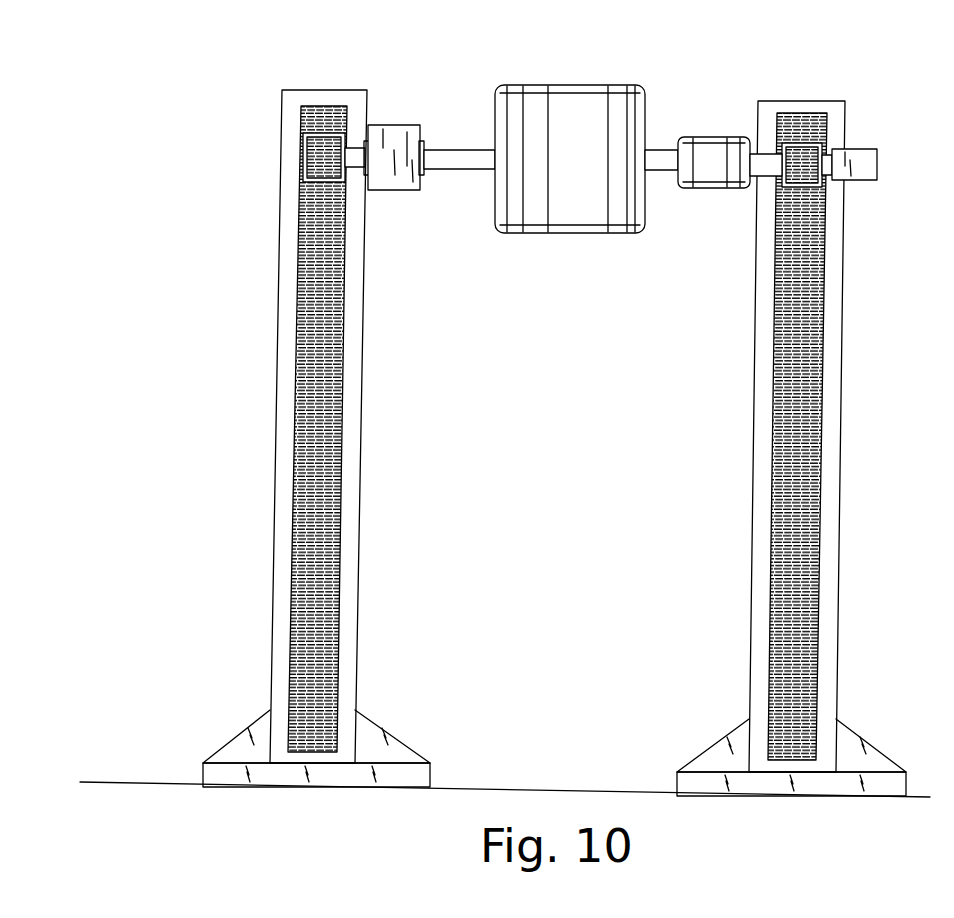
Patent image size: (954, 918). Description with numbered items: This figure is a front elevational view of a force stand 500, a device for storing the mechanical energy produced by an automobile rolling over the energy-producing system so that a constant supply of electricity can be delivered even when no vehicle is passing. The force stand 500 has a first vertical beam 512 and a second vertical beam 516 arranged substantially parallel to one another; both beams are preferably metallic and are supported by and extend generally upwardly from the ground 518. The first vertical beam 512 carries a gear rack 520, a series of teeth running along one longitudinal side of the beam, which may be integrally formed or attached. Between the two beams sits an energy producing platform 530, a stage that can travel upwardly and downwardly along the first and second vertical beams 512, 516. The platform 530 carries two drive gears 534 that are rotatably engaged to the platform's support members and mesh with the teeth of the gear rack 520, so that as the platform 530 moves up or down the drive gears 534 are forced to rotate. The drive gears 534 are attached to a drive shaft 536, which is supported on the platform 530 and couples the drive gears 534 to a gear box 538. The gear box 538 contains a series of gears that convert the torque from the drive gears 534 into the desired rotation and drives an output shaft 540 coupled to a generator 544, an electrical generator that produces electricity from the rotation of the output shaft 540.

The force stand 500 is at (367, 41).
The first vertical beam 512 is at (281, 140).
The second vertical beam 516 is at (846, 113).
The ground 518 is at (148, 782).
The gear rack 520 is at (312, 495).
The energy producing platform 530 is at (468, 145).
The drive gears 534 is at (452, 157).
The drive shaft 536 is at (765, 162).
The gear box 538 is at (701, 190).
The output shaft 540 is at (660, 135).
The generator 544 is at (590, 87).